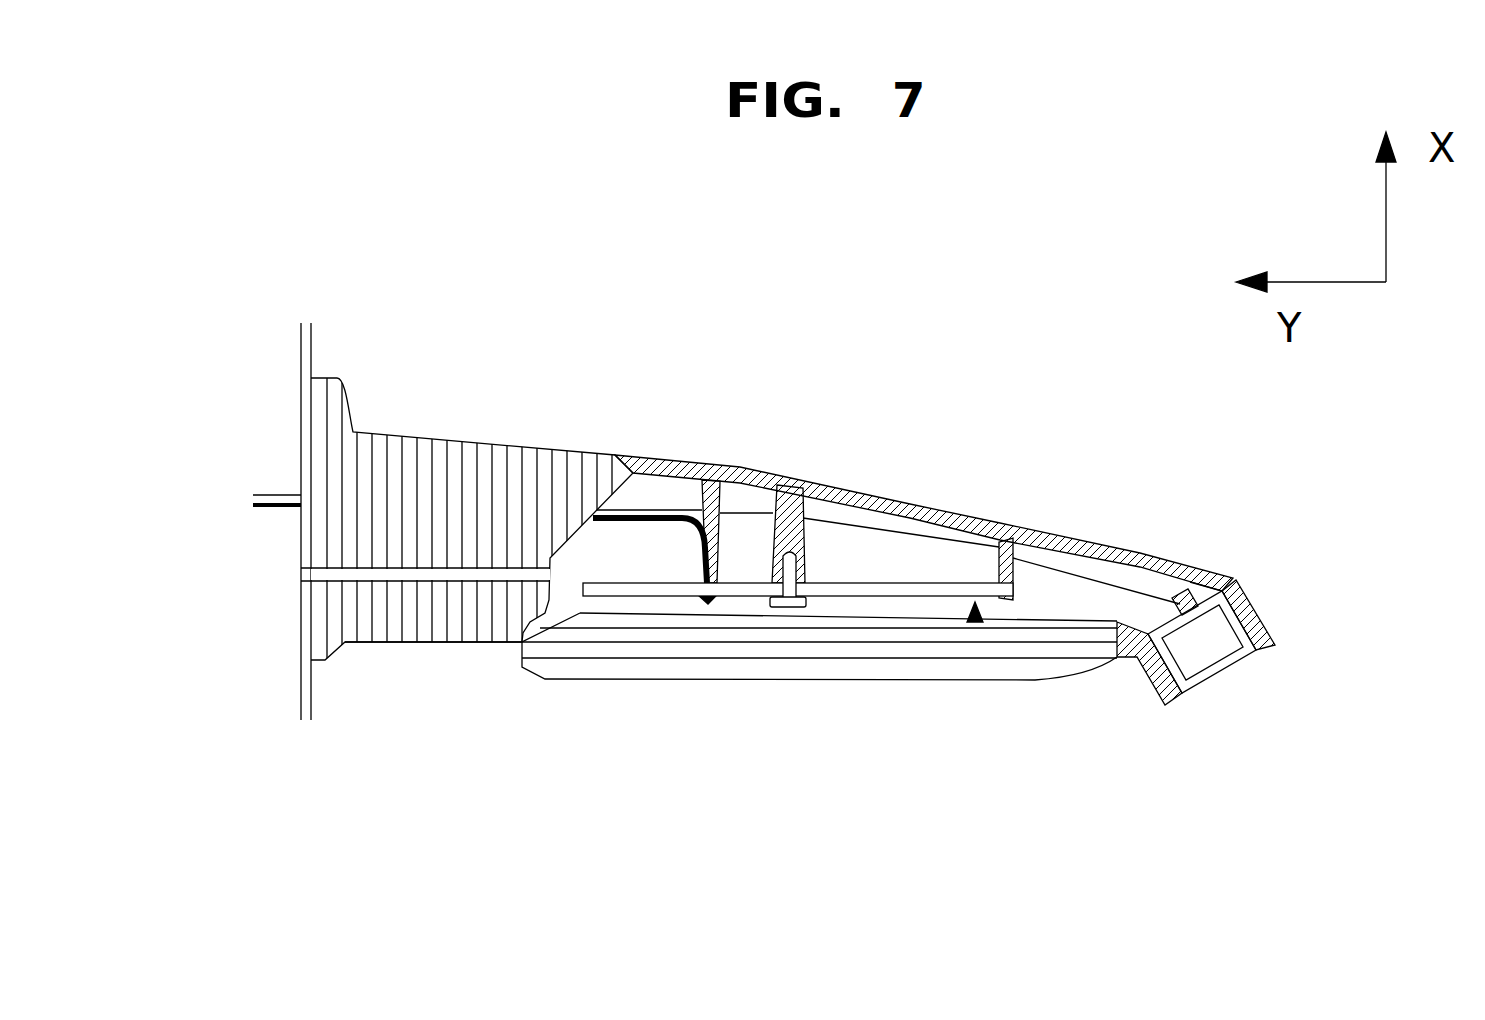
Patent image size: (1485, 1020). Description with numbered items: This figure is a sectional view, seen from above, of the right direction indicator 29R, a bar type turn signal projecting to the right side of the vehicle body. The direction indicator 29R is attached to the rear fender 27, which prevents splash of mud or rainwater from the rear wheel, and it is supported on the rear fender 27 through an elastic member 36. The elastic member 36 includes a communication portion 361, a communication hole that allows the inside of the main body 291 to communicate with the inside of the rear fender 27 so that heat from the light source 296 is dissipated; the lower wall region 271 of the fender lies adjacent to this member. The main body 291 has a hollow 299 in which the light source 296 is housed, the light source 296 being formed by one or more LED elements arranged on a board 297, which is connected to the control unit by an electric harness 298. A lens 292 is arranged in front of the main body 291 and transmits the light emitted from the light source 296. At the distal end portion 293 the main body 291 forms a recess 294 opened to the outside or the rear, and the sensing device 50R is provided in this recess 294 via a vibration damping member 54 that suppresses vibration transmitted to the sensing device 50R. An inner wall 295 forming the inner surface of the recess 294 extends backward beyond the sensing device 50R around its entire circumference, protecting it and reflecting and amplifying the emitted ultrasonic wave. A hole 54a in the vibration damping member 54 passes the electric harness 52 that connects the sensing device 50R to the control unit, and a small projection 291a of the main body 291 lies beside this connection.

The rear fender 27 is at (299, 341).
The wall portion 271 is at (299, 628).
The elastic member 36 is at (543, 449).
The communication portion 361 is at (299, 566).
The right direction indicator 29R is at (800, 457).
The main body 291 is at (1043, 532).
The projection of plate 291a is at (1178, 597).
The hollow 299 is at (907, 565).
The electric harness 52 is at (965, 540).
The electric harness 298 is at (642, 523).
The lens 292 is at (787, 655).
The board 297 is at (913, 600).
The light source 296 is at (977, 625).
The inner wall 295 is at (1172, 702).
The recess 294 is at (1221, 588).
The distal end portion 293 is at (1268, 640).
The vibration damping member 54 is at (1193, 690).
The hole 54a is at (1205, 582).
The sensing device 50R is at (1264, 634).